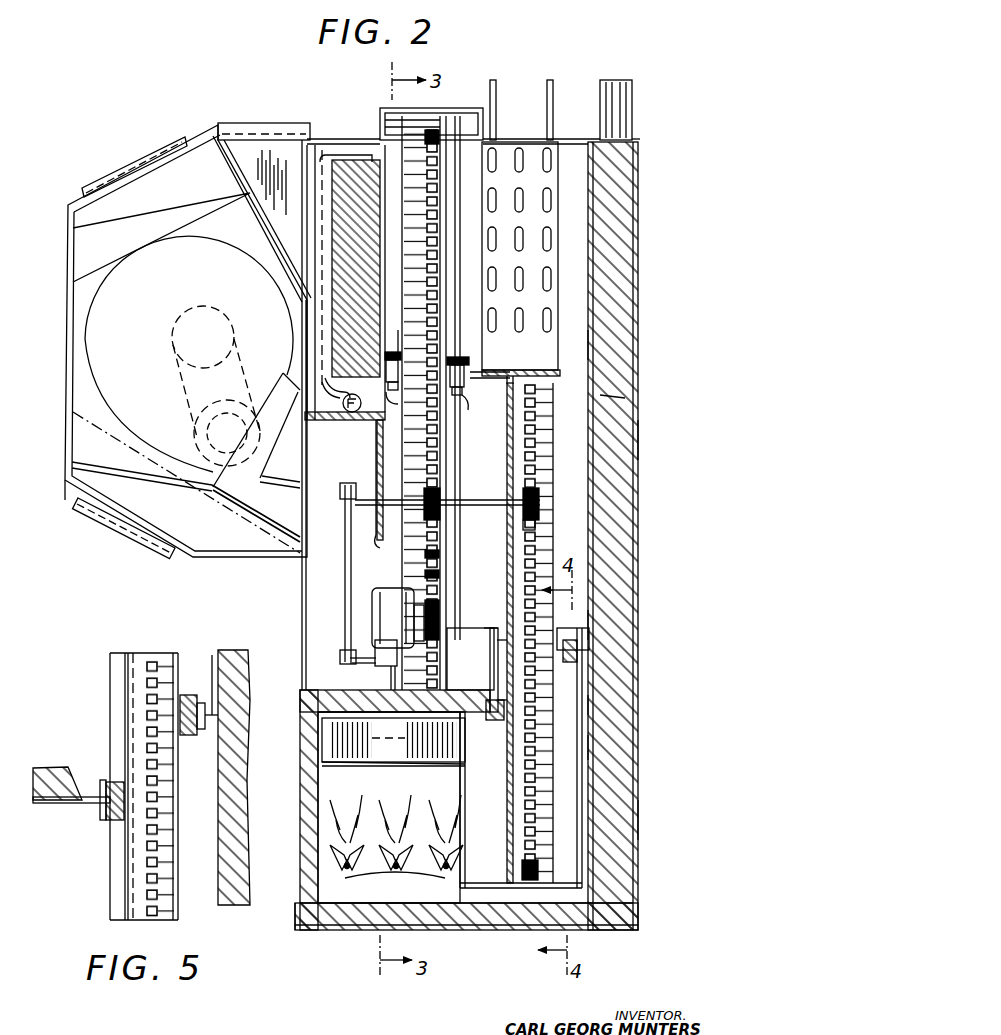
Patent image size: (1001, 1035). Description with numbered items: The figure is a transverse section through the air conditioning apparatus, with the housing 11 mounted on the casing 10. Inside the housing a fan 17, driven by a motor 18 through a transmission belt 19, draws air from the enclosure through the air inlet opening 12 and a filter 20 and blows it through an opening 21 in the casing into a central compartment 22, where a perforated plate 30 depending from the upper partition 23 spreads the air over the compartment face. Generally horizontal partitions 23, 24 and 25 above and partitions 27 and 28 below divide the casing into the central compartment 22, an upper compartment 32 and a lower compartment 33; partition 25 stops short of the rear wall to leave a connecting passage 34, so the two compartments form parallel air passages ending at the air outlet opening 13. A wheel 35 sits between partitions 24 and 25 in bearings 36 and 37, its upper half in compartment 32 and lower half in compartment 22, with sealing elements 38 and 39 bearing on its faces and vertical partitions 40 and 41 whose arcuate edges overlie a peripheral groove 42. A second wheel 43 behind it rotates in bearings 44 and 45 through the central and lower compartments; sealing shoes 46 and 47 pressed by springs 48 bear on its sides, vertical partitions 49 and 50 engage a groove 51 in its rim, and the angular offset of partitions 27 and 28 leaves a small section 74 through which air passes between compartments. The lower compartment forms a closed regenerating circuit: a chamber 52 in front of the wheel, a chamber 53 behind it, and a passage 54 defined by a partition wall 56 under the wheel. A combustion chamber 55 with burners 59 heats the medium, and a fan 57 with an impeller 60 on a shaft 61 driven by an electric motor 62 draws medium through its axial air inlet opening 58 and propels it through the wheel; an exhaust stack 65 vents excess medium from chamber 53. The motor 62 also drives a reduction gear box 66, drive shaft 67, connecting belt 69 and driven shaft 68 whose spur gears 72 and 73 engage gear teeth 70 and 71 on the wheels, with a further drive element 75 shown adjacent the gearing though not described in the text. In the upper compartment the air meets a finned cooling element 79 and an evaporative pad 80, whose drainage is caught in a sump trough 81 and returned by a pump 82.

In FIG. 2, the casing 10 is at (337, 134).
In FIG. 2, the housing 11 is at (66, 502).
In FIG. 2, the air inlet opening 12 is at (150, 158).
In FIG. 2, the air outlet opening 13 is at (257, 123).
In FIG. 2, the fan 17 is at (100, 350).
In FIG. 2, the motor 18 is at (196, 432).
In FIG. 2, the transmission belt 19 is at (245, 374).
In FIG. 2, the filter 20 is at (80, 250).
In FIG. 2, the opening 21 is at (290, 532).
In FIG. 2, the central compartment 22 is at (641, 447).
In FIG. 2, the upper partition 23 is at (320, 420).
In FIG. 2, the upper partition 24 is at (390, 352).
In FIG. 2, the upper partition 25 is at (474, 408).
In FIG. 2, the lower partition 27 is at (320, 634).
In FIG. 5, the lower partition 27 is at (92, 800).
In FIG. 2, the lower partition 28 is at (588, 625).
In FIG. 5, the lower partition 28 is at (212, 656).
In FIG. 2, the perforated plate 30 is at (378, 462).
In FIG. 2, the upper compartment 32 is at (640, 196).
In FIG. 2, the lower compartment 33 is at (641, 824).
In FIG. 2, the connecting passage 34 is at (580, 350).
In FIG. 2, the wheel 35 is at (438, 470).
In FIG. 2, the bearing 36 is at (398, 395).
In FIG. 2, the bearing 37 is at (468, 404).
In FIG. 2, the sealing element 38 is at (400, 358).
In FIG. 2, the sealing element 39 is at (455, 366).
In FIG. 2, the vertical partition 40 is at (458, 125).
In FIG. 2, the vertical partition 41 is at (440, 674).
In FIG. 2, the groove 42 is at (445, 182).
In FIG. 2, the second wheel 43 is at (540, 446).
In FIG. 5, the second wheel 43 is at (172, 902).
In FIG. 2, the bearing 44 is at (493, 628).
In FIG. 2, the bearing 45 is at (562, 636).
In FIG. 2, the sealing element 46 is at (492, 700).
In FIG. 5, the sealing element 46 is at (108, 816).
In FIG. 2, the sealing element 47 is at (567, 664).
In FIG. 5, the sealing element 47 is at (198, 732).
In FIG. 5, the spring 48 is at (190, 698).
In FIG. 2, the vertical partition 49 is at (525, 365).
In FIG. 2, the vertical partition 50 is at (502, 878).
In FIG. 2, the groove 51 is at (504, 840).
In FIG. 5, the groove 51 is at (128, 872).
In FIG. 2, the chamber 52 is at (478, 789).
In FIG. 2, the chamber 53 is at (580, 745).
In FIG. 2, the passage 54 is at (496, 912).
In FIG. 2, the combustion chamber 55 is at (322, 908).
In FIG. 2, the partition wall 56 is at (542, 886).
In FIG. 2, the fan 57 is at (332, 744).
In FIG. 2, the axial air inlet opening 58 is at (378, 768).
In FIG. 2, the burners 59 is at (388, 872).
In FIG. 2, the impeller 60 is at (332, 760).
In FIG. 2, the shaft 61 is at (399, 668).
In FIG. 2, the electric motor 62 is at (383, 594).
In FIG. 2, the exhaust stack 65 is at (618, 400).
In FIG. 2, the reduction gear box 66 is at (445, 645).
In FIG. 2, the drive shaft 67 is at (368, 662).
In FIG. 2, the driven shaft 68 is at (379, 530).
In FIG. 2, the connecting belt 69 is at (345, 558).
In FIG. 2, the gear teeth 70 is at (440, 578).
In FIG. 2, the gear teeth 71 is at (536, 538).
In FIG. 2, the spur gear 72 is at (440, 500).
In FIG. 2, the spur gear 73 is at (540, 502).
In FIG. 2, the small section 74 is at (588, 704).
In FIG. 2, the sprocket 75 is at (427, 623).
In FIG. 2, the cooling element 79 is at (545, 258).
In FIG. 2, the evaporative pad 80 is at (334, 230).
In FIG. 2, the sump trough 81 is at (286, 374).
In FIG. 2, the pump 82 is at (352, 414).